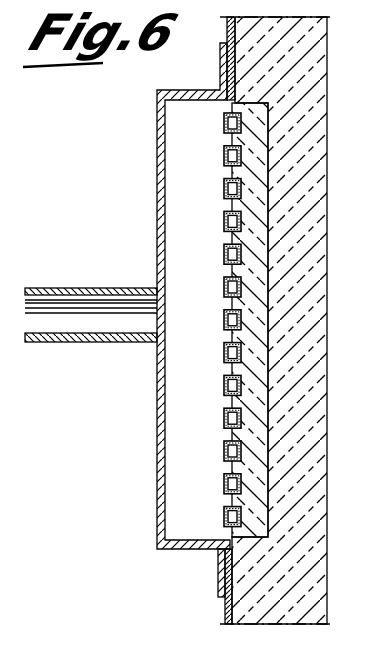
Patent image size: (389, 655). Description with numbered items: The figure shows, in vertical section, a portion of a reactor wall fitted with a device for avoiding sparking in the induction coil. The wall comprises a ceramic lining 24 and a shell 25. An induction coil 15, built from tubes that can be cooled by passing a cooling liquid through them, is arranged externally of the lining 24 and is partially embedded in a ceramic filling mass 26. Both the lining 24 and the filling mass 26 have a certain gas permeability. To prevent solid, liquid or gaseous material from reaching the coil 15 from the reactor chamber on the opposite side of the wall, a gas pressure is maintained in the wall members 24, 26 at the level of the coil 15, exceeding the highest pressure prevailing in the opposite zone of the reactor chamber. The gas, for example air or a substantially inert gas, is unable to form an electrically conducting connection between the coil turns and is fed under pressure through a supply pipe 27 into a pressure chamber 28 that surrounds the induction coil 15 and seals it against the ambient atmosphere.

The induction coil 15 is at (224, 426).
The ceramic lining 24 is at (318, 130).
The shell 25 is at (227, 32).
The ceramic filling mass 26 is at (232, 212).
The supply pipe 27 is at (100, 290).
The pressure chamber 28 is at (158, 133).